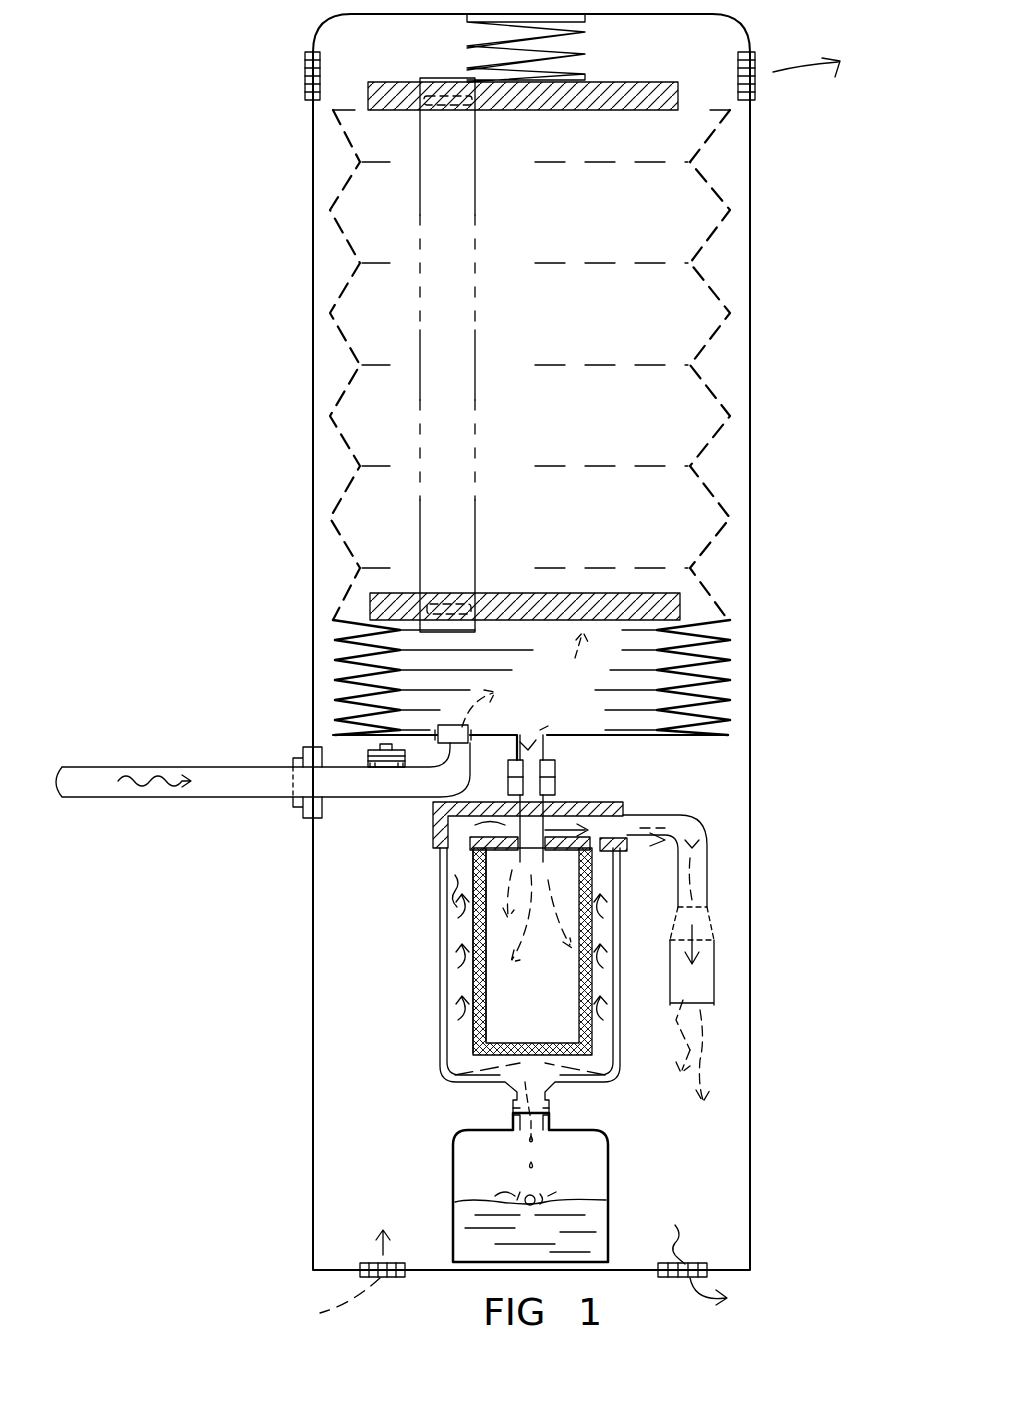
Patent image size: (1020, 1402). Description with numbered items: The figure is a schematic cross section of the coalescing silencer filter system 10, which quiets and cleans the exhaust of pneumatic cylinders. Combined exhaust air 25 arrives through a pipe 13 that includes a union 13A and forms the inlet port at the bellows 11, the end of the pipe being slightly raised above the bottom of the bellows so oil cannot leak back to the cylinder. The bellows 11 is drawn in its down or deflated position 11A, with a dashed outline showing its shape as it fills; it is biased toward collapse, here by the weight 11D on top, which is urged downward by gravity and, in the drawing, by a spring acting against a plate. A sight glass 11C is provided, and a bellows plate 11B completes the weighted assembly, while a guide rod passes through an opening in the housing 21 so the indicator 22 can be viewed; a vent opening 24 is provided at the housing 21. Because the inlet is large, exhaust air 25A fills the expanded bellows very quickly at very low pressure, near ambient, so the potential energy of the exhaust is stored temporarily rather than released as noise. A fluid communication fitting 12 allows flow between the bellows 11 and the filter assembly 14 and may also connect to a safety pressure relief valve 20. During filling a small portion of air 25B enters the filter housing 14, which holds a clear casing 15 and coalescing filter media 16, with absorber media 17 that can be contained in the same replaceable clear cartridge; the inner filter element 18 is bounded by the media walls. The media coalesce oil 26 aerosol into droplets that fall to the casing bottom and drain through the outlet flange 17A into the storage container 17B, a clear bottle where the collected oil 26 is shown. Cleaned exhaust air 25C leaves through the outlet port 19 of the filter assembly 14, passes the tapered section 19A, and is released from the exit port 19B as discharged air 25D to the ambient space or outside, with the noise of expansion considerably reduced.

The coalescing silencer filter system 10 is at (142, 160).
The bellows 11 is at (417, 393).
The deflated position 11A is at (360, 625).
The bellows top plate 11B is at (355, 105).
The sight glass 11C is at (447, 592).
The weight 11D is at (417, 365).
The fluid communication fitting 12 is at (625, 805).
The pipe 13 is at (437, 818).
The union 13A is at (293, 787).
The filter assembly 14 is at (467, 828).
The casing 15 is at (475, 930).
The coalescing filter media 16 is at (478, 1000).
The absorber media 17 is at (512, 1085).
The outlet flange 17A is at (515, 1110).
The storage container 17B is at (453, 1170).
The inner filter chamber 18 is at (495, 956).
The outlet port 19 is at (750, 939).
The vent tube taper 19A is at (713, 923).
The exit port 19B is at (713, 985).
The safety pressure relief valve 20 is at (367, 745).
The housing 21 is at (420, 202).
The indicator 22 is at (385, 208).
The vent opening 24 is at (303, 73).
The exhaust air 25 is at (153, 783).
The exhaust air in bellows 25A is at (468, 697).
The air entering filter housing 25B is at (555, 775).
The cleaned exhaust air 25C is at (600, 927).
The discharged air 25D is at (703, 1090).
The oil 26 is at (590, 1215).